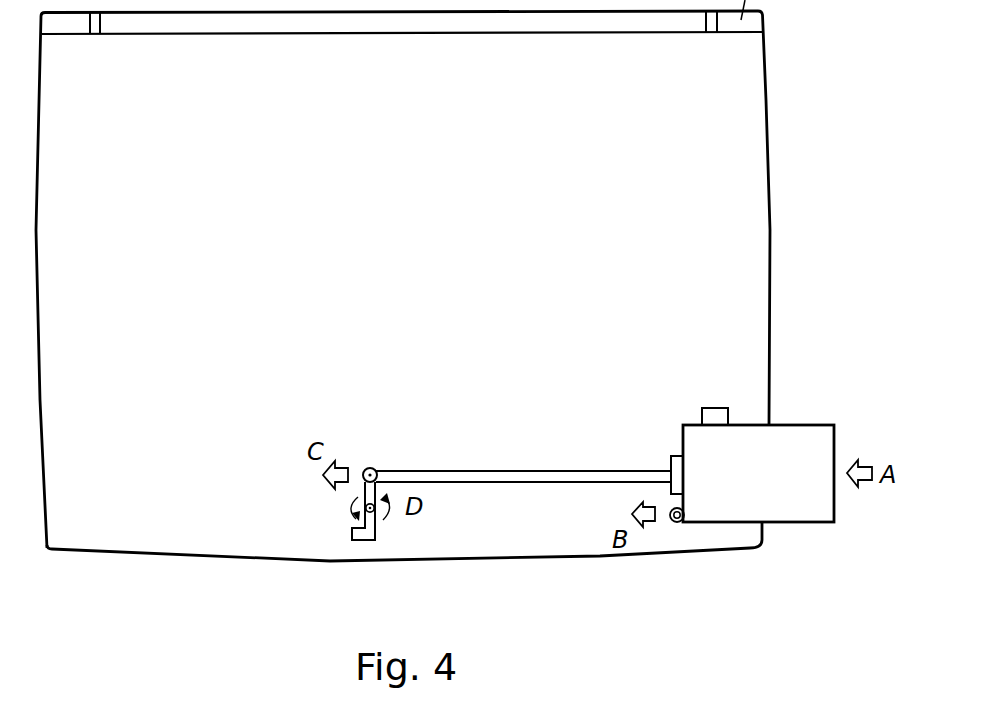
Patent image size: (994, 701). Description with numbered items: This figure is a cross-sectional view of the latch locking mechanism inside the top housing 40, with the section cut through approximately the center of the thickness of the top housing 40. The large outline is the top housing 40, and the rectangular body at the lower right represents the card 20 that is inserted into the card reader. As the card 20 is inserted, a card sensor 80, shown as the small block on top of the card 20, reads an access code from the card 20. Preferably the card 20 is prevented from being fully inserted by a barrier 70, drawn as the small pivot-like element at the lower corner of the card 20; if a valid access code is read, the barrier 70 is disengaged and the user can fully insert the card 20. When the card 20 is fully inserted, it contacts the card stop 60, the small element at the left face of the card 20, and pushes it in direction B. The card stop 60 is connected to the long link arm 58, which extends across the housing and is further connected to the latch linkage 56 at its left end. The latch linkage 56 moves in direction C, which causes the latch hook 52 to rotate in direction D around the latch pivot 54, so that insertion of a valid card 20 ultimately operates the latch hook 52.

The card 20 is at (805, 502).
The top housing 40 is at (755, 286).
The latch hook 52 is at (352, 534).
The latch pivot 54 is at (380, 522).
The latch linkage 56 is at (377, 469).
The link arm 58 is at (560, 472).
The card stop 60 is at (678, 456).
The barrier 70 is at (672, 522).
The card sensor 80 is at (710, 408).